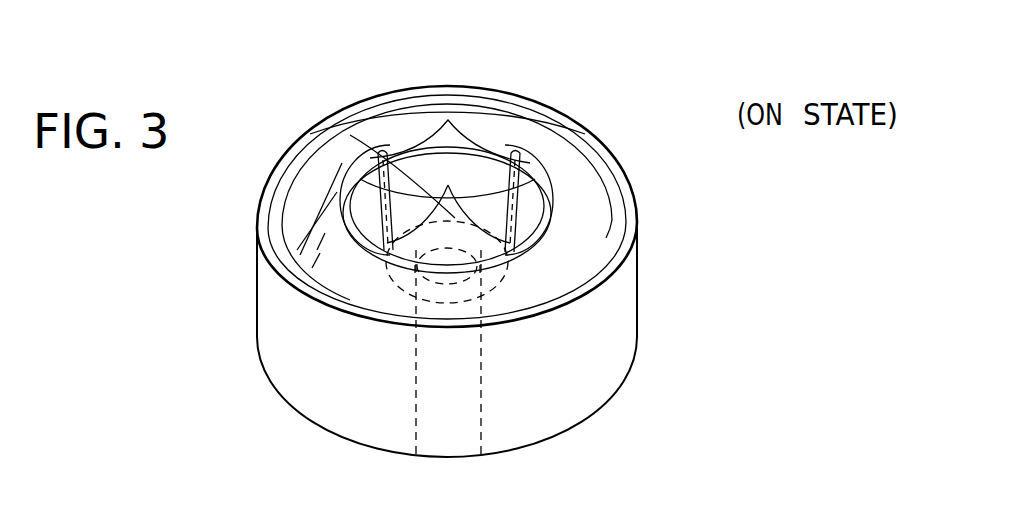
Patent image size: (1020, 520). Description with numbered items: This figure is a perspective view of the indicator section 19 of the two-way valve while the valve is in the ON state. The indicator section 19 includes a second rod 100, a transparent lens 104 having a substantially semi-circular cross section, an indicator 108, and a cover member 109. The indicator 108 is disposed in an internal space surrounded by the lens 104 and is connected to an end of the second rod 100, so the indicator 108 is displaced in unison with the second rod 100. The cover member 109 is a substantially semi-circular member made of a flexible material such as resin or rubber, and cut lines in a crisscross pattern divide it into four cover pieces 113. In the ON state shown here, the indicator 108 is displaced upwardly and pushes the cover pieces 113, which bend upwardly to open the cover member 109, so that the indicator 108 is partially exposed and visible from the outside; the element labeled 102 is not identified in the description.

The indicator section 19 is at (565, 103).
The second rod 100 is at (481, 398).
The housing 102 is at (613, 328).
The transparent lens 104 is at (381, 101).
The indicator 108 is at (460, 158).
The cover member 109 is at (470, 217).
The cover pieces 113 is at (340, 125).